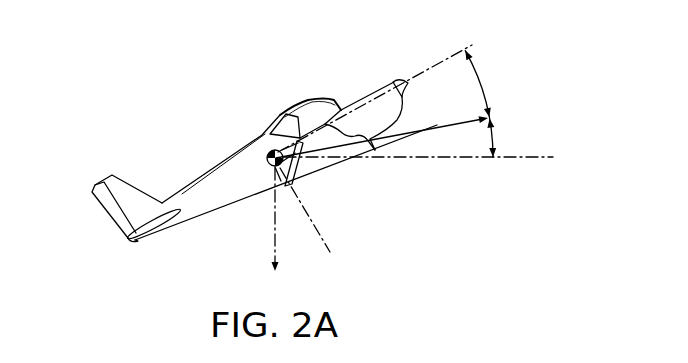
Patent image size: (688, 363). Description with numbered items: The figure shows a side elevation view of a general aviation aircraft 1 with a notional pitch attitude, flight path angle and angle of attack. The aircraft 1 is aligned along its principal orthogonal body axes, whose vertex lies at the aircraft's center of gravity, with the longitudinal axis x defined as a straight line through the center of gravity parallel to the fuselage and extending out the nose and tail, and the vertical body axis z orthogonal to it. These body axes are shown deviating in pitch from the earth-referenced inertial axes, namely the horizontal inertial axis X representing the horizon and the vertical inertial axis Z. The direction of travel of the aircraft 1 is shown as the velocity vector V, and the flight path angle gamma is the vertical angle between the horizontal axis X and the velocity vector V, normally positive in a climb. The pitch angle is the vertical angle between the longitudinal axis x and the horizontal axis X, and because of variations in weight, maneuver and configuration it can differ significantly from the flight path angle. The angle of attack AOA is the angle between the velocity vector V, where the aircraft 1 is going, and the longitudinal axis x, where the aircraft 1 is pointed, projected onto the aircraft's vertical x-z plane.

The general aviation aircraft 1 is at (233, 117).
The horizontal inertial axis X is at (428, 157).
The longitudinal aircraft body axis x is at (383, 91).
The vertical inertial axis Z is at (275, 232).
The vertical aircraft body axis z is at (309, 218).
The velocity vector V is at (392, 132).
The angle of attack AOA is at (486, 75).